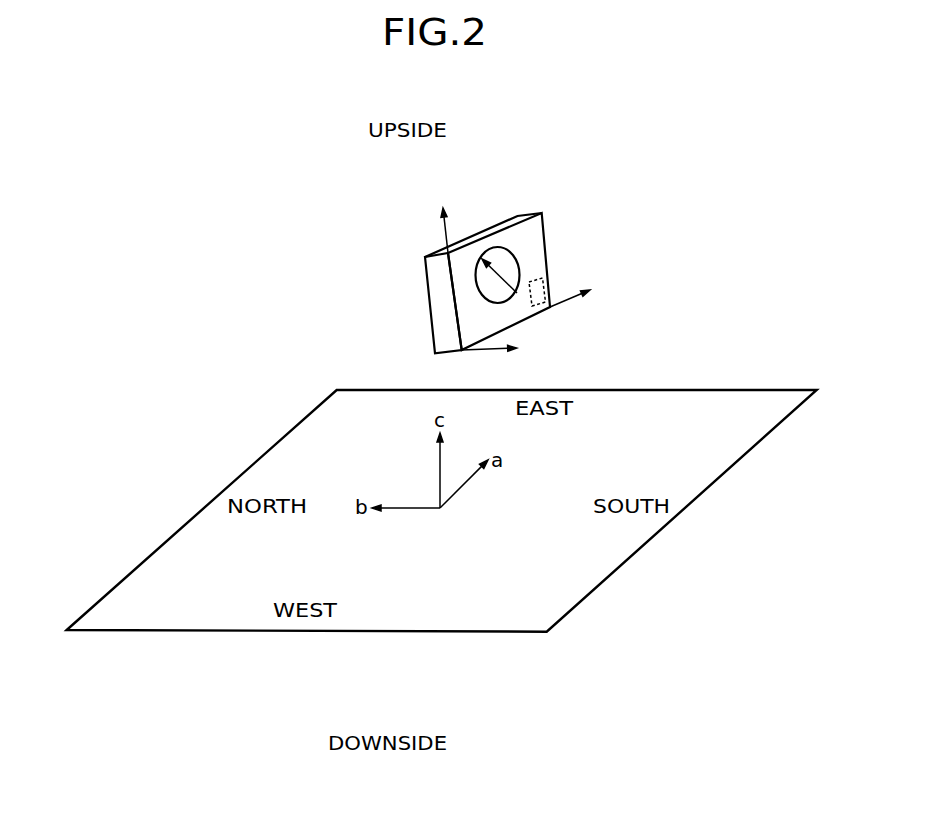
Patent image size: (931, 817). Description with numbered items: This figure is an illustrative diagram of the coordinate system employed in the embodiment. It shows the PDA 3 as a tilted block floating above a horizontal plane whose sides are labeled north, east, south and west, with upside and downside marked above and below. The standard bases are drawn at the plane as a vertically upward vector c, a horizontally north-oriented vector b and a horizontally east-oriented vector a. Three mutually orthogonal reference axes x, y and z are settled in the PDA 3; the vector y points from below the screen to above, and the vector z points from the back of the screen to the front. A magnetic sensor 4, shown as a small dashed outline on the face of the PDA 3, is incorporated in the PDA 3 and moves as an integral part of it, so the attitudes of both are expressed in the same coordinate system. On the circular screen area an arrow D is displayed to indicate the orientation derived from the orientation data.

The PDA 3 is at (528, 212).
The magnetic sensor 4 is at (543, 290).
The arrow D is at (500, 277).